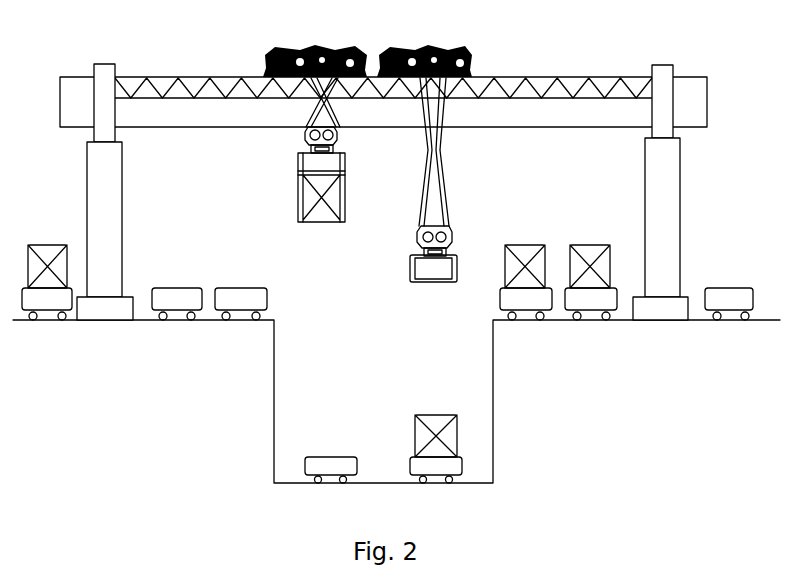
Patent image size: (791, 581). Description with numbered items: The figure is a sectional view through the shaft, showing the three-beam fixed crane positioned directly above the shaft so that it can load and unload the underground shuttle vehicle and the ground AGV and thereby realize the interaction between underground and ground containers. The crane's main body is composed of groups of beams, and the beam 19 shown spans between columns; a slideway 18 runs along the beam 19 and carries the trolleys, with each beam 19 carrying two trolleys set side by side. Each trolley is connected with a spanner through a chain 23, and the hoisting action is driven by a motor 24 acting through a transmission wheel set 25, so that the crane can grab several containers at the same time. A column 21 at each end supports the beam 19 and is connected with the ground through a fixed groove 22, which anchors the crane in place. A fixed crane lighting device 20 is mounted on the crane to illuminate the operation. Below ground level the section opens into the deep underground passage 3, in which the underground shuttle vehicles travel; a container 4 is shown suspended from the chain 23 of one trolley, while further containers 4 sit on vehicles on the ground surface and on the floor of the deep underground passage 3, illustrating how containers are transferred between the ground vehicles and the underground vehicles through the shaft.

The deep underground passage 3 is at (497, 411).
The container 4 is at (347, 193).
The slideway 18 is at (497, 85).
The beam 19 is at (550, 112).
The fixed crane lighting device 20 is at (662, 80).
The column 21 is at (666, 215).
The fixed groove 22 is at (655, 305).
The chain 23 is at (445, 195).
The motor 24 is at (447, 232).
The transmission wheel set 25 is at (450, 250).